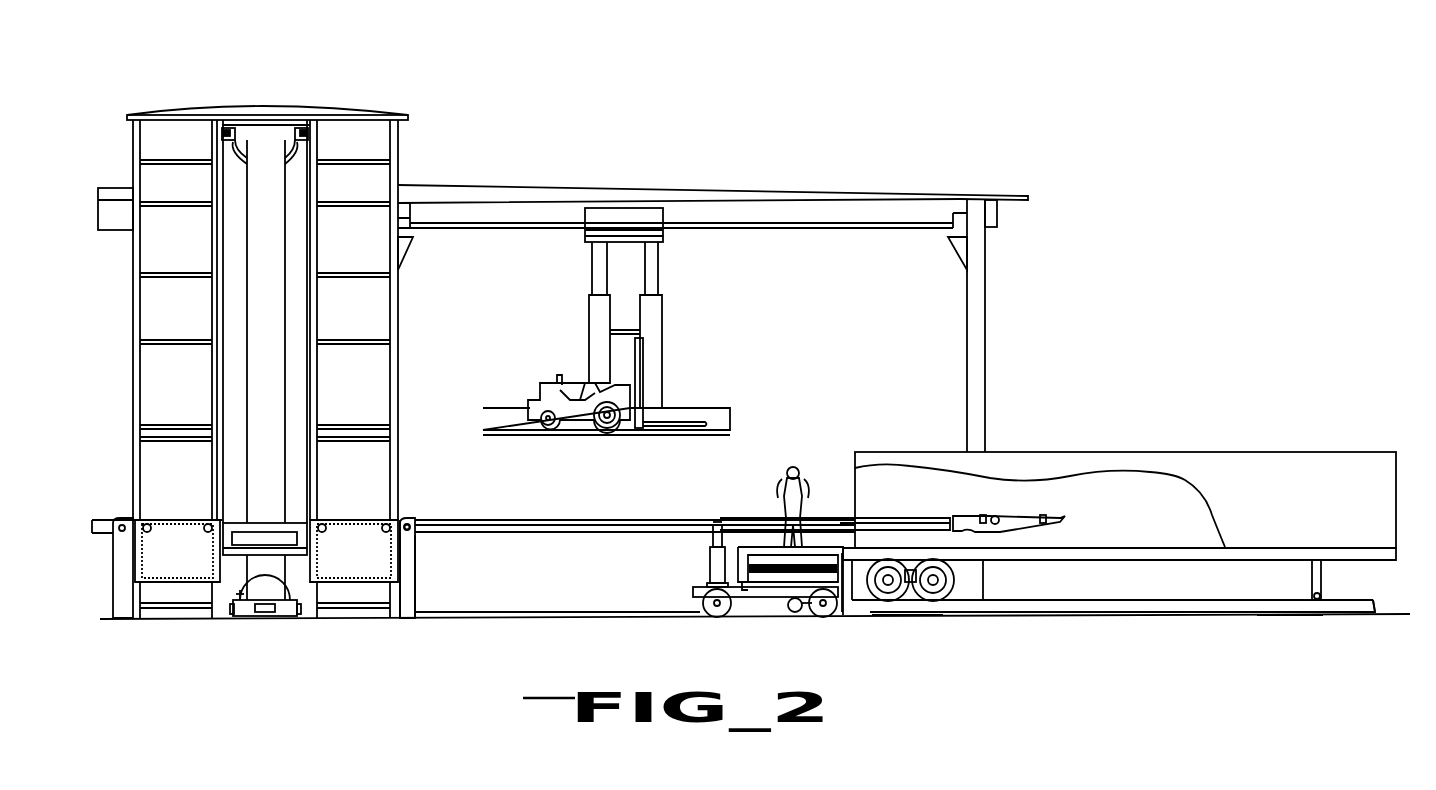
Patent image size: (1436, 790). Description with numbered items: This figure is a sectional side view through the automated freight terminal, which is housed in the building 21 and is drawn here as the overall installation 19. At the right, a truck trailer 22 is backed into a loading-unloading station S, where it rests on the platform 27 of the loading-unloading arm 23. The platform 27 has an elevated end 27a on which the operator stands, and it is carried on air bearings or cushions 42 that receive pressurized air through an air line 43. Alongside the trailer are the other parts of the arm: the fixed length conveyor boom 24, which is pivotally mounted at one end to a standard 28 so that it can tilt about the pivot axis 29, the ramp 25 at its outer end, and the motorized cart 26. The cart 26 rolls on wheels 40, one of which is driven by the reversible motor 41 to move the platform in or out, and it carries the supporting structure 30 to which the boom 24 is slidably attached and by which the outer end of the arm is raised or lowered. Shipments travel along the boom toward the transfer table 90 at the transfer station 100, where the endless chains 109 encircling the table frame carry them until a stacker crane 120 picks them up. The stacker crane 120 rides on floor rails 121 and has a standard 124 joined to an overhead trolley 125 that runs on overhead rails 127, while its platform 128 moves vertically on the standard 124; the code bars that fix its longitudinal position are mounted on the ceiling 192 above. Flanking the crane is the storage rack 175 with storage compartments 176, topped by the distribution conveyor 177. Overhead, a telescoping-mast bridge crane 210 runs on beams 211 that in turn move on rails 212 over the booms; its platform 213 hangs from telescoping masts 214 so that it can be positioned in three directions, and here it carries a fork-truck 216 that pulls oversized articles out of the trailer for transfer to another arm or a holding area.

The building 19 is at (875, 155).
The building 21 is at (1125, 620).
The truck trailer 22 is at (1080, 456).
The loading-unloading arm 23 is at (516, 517).
The fixed length conveyor boom 24 is at (447, 520).
The ramp 25 is at (1065, 516).
The motorized cart 26 is at (697, 592).
The platform 27 is at (1195, 603).
The elevated end 27a is at (848, 520).
The standard 28 is at (406, 570).
The pivot axis 29 is at (415, 538).
The supporting structure 30 is at (707, 548).
The wheels 40 is at (717, 611).
The reversible motor 41 is at (792, 611).
The air bearings or cushions 42 is at (928, 616).
The air line 43 is at (442, 614).
The transfer table 90 is at (160, 512).
The transfer station 100 is at (372, 486).
The endless chain 109 is at (265, 571).
The stacker crane 120 is at (276, 403).
The rails 121 is at (283, 636).
The standard 124 is at (280, 337).
The overhead trolley 125 is at (300, 118).
The overhead rails 127 is at (290, 155).
The platform 128 is at (255, 525).
The storage rack 175 is at (402, 296).
The storage compartments 176 is at (152, 327).
The conveyor 177 is at (170, 138).
The ceiling 192 is at (243, 107).
The telescoping-mast bridge crane 210 is at (686, 357).
The beams 211 is at (822, 214).
The rails 212 is at (400, 250).
The platform 213 is at (732, 433).
The telescoping masts 214 is at (650, 322).
The fork-truck 216 is at (515, 393).
The loading-unloading stations S is at (1275, 437).